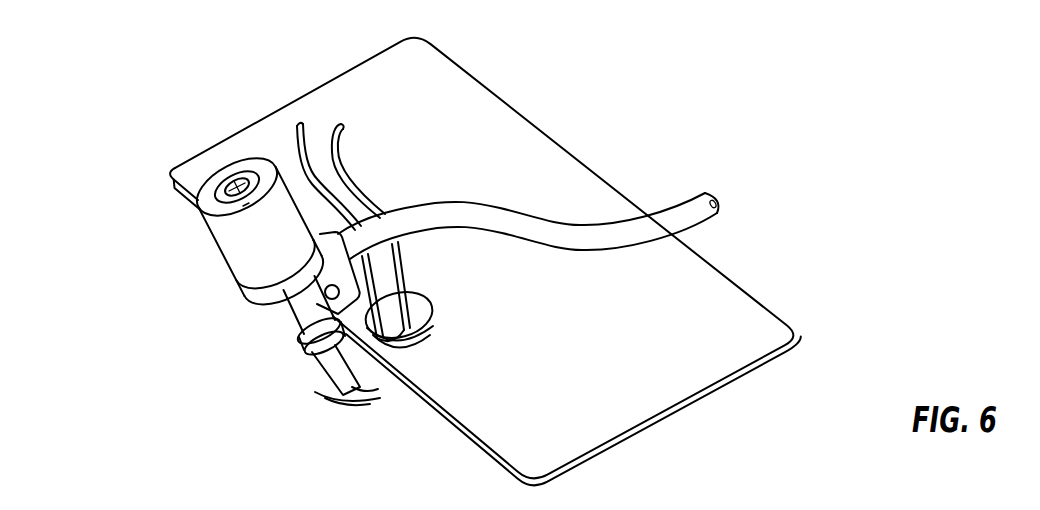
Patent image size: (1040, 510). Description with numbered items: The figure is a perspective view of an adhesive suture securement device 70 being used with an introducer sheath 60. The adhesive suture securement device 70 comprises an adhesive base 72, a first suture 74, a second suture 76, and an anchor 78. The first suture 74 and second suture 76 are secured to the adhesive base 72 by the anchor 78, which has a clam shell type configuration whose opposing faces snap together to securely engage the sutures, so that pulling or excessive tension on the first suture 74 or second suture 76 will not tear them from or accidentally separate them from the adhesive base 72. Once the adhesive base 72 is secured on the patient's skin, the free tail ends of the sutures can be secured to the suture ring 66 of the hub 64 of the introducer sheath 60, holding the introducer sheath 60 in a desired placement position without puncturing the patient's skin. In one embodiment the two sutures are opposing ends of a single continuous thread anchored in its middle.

The introducer sheath 60 is at (175, 258).
The hub 64 is at (240, 268).
The suture ring 66 is at (386, 366).
The adhesive suture securement device 70 is at (533, 96).
The adhesive base 72 is at (593, 422).
The first suture 74 is at (303, 160).
The second suture 76 is at (336, 149).
The anchor 78 is at (417, 304).